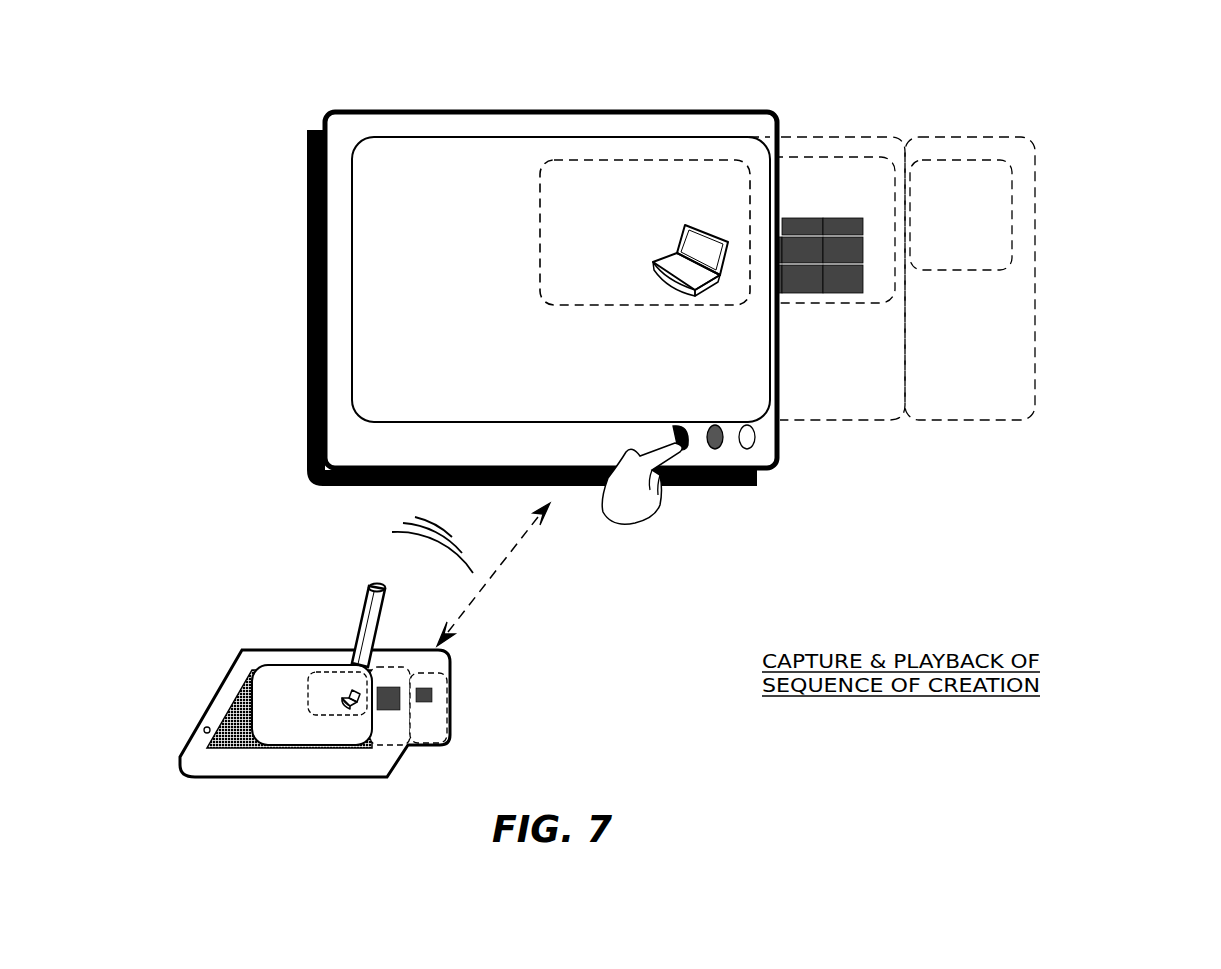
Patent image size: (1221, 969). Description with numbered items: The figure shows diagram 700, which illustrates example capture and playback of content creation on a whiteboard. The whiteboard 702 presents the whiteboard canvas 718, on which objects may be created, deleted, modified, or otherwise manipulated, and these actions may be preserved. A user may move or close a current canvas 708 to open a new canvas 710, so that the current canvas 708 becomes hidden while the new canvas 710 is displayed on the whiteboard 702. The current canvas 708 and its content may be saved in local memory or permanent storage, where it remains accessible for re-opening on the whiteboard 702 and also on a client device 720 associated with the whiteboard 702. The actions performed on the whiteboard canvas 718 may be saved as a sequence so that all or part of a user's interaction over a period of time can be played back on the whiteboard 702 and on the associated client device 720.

The diagram 700 is at (1113, 74).
The whiteboard 702 is at (448, 105).
The current canvas 708 is at (1016, 131).
The new canvas 710 is at (536, 240).
The whiteboard canvas 718 is at (494, 153).
The client device 720 is at (184, 729).